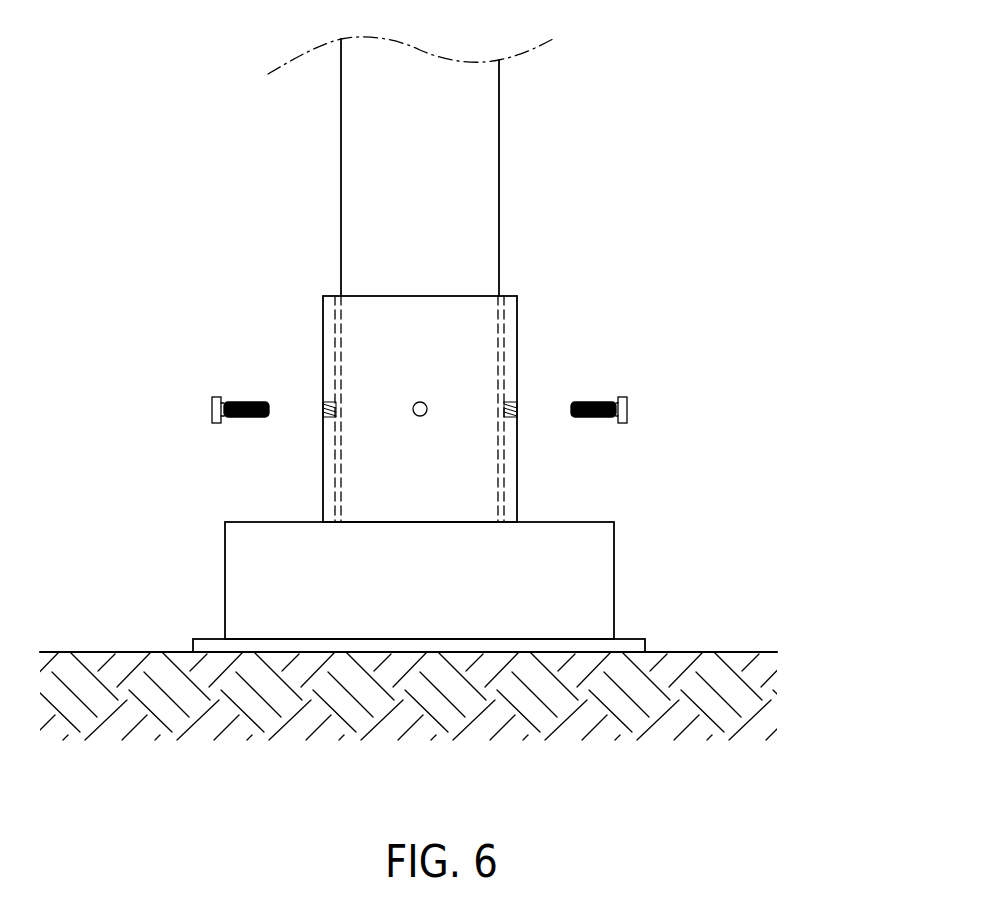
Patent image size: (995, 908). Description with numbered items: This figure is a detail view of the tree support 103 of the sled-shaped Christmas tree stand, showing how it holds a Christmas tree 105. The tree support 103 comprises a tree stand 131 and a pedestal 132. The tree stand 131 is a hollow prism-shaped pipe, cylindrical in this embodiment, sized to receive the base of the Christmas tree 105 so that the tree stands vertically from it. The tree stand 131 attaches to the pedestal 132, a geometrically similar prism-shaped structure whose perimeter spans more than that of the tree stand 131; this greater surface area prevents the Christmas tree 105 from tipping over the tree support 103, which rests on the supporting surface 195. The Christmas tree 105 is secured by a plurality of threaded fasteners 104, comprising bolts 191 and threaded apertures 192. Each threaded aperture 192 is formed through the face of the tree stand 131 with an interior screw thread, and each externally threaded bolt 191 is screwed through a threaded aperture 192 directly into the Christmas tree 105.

The Christmas tree 105 is at (499, 210).
The tree support 103 is at (517, 318).
The tree stand 131 is at (517, 488).
The threaded apertures 192 is at (324, 398).
The bolts 191 is at (233, 400).
The threaded fasteners 104 is at (158, 416).
The pedestal 132 is at (600, 565).
The supporting surface 195 is at (413, 715).